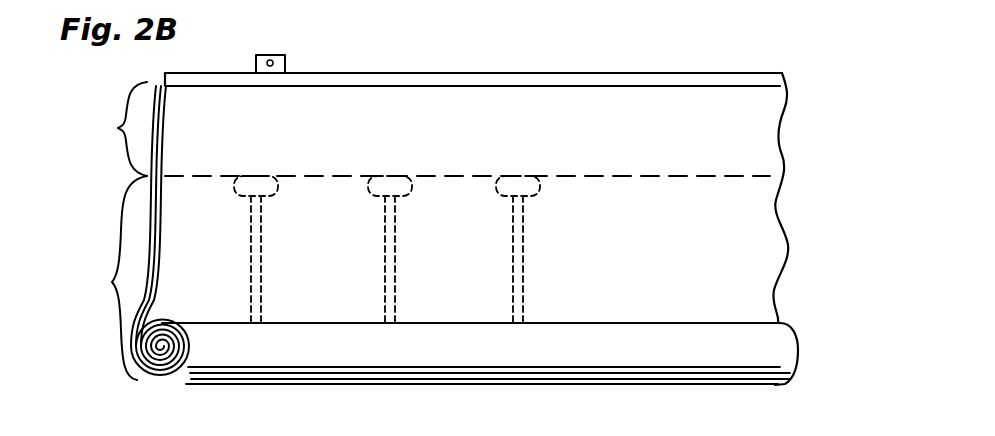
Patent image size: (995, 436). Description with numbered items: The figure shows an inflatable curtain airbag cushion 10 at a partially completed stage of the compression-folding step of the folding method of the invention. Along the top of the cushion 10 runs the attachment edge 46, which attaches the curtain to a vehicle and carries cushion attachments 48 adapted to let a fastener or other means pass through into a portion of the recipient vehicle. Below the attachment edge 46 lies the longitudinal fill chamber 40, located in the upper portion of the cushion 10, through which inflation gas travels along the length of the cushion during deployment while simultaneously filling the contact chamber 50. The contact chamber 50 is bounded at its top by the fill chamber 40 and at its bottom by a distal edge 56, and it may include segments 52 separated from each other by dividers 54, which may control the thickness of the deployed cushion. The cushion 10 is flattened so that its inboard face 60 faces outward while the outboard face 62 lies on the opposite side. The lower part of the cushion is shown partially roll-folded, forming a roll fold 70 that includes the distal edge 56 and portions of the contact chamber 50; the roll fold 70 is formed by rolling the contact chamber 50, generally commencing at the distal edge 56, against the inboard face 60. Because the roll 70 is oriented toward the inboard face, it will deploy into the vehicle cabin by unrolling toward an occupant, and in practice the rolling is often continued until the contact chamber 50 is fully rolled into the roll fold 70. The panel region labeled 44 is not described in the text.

The inflatable curtain airbag cushion 10 is at (630, 56).
The longitudinal fill chamber 40 is at (116, 129).
The upper panel 44 is at (200, 133).
The attachment edge 46 is at (466, 80).
The cushion attachments 48 is at (273, 63).
The contact chamber 50 is at (113, 278).
The segments 52 is at (197, 297).
The dividers 54 is at (262, 297).
The distal edge 56 is at (163, 346).
The inboard face 60 is at (473, 218).
The outboard face 62 is at (470, 278).
The roll fold 70 is at (378, 350).